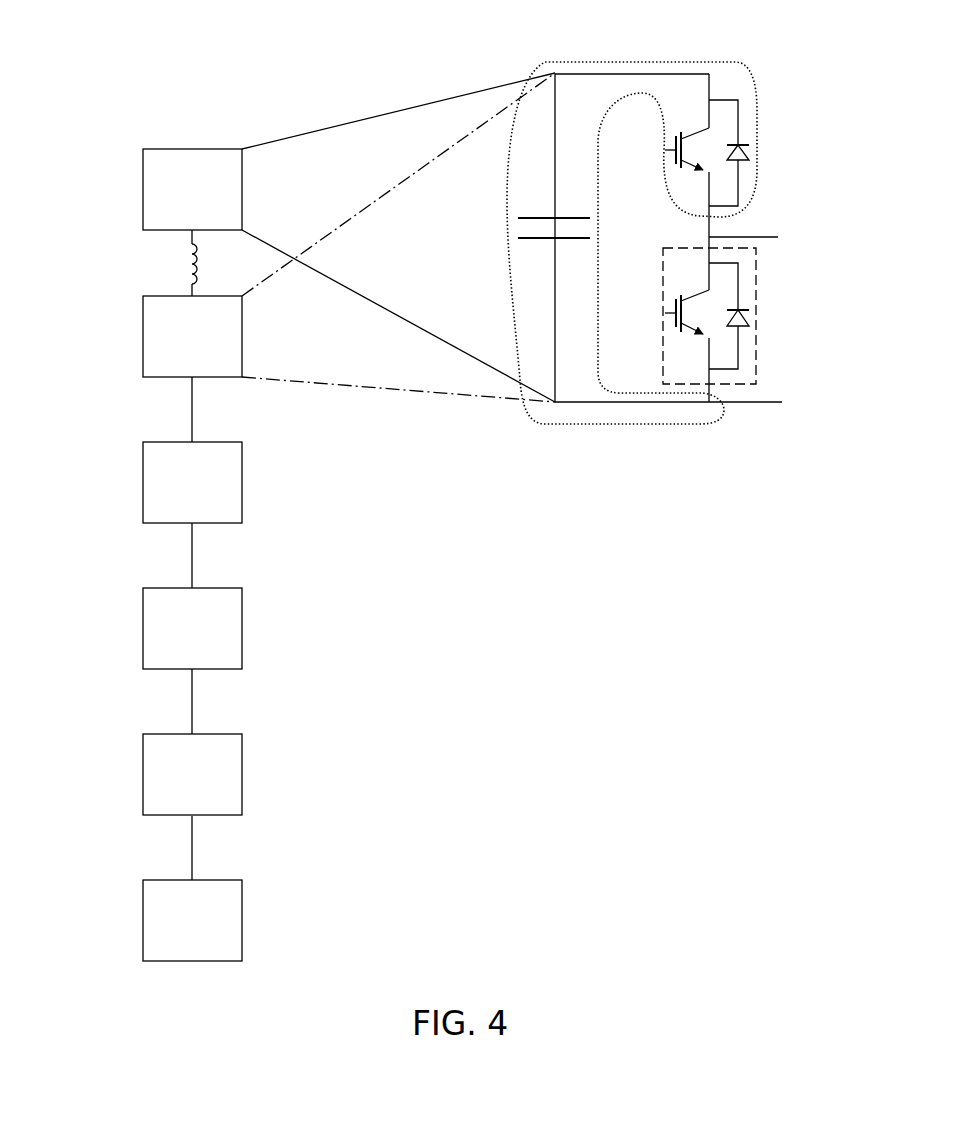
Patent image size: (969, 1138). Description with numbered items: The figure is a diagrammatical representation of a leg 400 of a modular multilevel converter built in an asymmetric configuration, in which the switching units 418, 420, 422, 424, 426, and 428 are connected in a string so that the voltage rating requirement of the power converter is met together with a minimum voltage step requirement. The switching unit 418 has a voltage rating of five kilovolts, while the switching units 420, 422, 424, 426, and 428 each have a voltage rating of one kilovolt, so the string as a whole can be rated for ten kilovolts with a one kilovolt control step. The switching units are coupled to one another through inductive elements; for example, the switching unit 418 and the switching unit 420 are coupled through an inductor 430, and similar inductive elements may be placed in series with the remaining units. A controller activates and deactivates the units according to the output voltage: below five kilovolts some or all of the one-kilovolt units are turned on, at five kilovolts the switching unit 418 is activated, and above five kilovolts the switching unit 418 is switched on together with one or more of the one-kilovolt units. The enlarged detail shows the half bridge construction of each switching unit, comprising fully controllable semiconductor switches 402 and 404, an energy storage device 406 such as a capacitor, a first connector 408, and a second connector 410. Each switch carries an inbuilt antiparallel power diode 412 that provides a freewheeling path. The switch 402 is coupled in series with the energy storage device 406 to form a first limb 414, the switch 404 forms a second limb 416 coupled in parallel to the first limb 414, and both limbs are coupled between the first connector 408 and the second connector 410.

The leg 400 is at (147, 121).
The fully controllable semiconductor switch 402 is at (690, 132).
The fully controllable semiconductor switch 404 is at (680, 300).
The energy storage device 406 is at (565, 215).
The first connector 408 is at (722, 237).
The second connector 410 is at (764, 403).
The power diode 412 is at (755, 312).
The first limb 414 is at (543, 61).
The second limb 416 is at (762, 367).
The switching unit 418 is at (143, 190).
The switching unit 420 is at (143, 337).
The switching unit 422 is at (143, 483).
The switching unit 424 is at (143, 629).
The switching unit 426 is at (143, 775).
The switching unit 428 is at (143, 921).
The inductor 430 is at (186, 268).